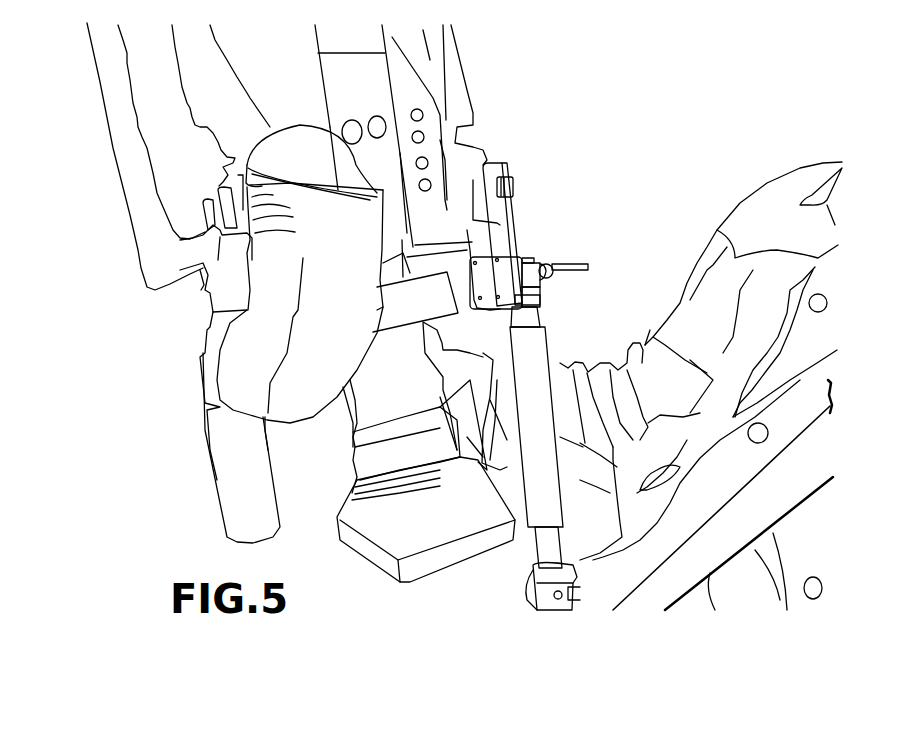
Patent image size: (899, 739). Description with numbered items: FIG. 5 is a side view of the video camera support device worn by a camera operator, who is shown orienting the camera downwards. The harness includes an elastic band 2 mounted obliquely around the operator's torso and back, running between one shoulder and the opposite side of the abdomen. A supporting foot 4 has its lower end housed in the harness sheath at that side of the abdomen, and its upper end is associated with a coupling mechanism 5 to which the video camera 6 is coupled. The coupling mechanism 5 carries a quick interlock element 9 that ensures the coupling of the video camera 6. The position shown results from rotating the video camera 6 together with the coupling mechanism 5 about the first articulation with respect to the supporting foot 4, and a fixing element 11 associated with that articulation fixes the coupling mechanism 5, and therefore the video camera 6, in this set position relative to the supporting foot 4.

The elastic band 2 is at (763, 503).
The supporting foot 4 is at (530, 347).
The coupling mechanism 5 is at (530, 225).
The video camera 6 is at (397, 123).
The quick interlock element 9 is at (512, 183).
The fixing element 11 is at (547, 263).